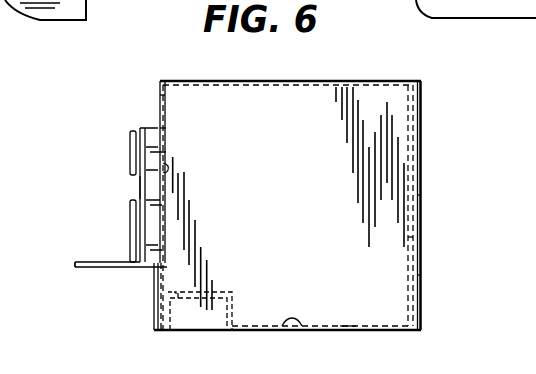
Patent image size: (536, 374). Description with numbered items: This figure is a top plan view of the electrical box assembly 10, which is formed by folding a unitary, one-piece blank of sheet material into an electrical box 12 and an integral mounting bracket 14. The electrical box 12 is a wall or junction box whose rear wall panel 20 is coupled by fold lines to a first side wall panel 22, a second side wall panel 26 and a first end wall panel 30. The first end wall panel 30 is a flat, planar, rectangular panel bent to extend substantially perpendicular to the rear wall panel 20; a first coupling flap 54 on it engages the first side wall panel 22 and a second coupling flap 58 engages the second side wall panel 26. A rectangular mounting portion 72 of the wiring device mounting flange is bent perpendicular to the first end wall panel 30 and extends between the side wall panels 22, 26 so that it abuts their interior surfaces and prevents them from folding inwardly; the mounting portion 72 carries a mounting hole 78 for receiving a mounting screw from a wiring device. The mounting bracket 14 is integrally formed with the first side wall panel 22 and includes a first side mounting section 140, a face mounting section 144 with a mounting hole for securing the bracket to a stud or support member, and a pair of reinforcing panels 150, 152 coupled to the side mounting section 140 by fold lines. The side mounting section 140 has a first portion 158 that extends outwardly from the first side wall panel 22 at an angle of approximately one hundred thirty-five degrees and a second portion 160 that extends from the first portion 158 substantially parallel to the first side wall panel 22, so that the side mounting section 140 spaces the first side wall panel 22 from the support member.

The electrical box assembly 10 is at (72, 141).
The electrical box 12 is at (421, 200).
The mounting bracket 14 is at (84, 270).
The rear wall panel 20 is at (238, 81).
The first side wall panel 22 is at (157, 97).
The second side wall panel 26 is at (418, 237).
The first end wall panel 30 is at (299, 207).
The first coupling flap 54 is at (153, 297).
The second coupling flap 58 is at (421, 275).
The mounting portion 72 is at (348, 325).
The mounting hole 78 is at (290, 320).
The first side mounting section 140 is at (147, 128).
The face mounting section 144 is at (112, 262).
The reinforcing panel 150 is at (130, 223).
The reinforcing panel 152 is at (130, 147).
The first portion 158 is at (172, 172).
The second portion 160 is at (138, 189).